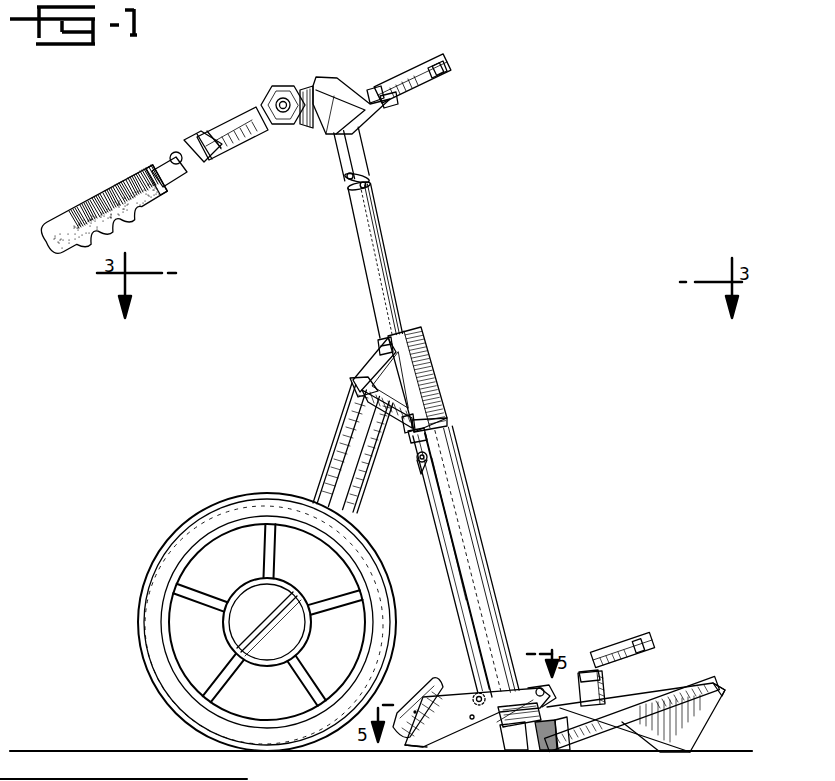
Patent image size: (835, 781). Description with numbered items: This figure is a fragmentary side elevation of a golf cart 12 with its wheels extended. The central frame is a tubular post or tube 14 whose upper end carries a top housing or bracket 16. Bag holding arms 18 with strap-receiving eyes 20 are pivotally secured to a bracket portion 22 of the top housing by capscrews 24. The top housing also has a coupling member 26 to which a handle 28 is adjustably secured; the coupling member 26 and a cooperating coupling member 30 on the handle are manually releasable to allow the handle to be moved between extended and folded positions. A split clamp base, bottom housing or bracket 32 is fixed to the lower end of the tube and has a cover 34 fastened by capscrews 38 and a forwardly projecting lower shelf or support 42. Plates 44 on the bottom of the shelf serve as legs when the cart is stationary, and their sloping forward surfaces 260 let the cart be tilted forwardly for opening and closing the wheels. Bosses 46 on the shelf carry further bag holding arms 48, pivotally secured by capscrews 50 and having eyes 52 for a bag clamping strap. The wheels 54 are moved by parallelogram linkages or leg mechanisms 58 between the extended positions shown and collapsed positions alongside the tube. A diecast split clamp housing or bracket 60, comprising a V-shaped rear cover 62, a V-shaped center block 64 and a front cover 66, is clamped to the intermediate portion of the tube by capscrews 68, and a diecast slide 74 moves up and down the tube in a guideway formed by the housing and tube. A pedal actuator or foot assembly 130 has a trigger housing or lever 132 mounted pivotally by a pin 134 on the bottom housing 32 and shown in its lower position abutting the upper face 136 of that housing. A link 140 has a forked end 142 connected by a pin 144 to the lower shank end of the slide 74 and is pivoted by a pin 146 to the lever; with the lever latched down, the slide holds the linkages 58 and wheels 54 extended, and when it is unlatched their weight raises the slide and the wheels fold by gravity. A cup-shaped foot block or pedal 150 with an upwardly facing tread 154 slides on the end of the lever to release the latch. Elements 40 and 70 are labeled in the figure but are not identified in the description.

The golf cart 12 is at (414, 266).
The tubular post or tube 14 is at (474, 530).
The top housing or bracket 16 is at (349, 94).
The bag holding arms 18 is at (422, 80).
The strap-receiving eyes 20 is at (441, 67).
The bracket portion 22 is at (388, 102).
The capscrews 24 is at (373, 90).
The coupling member 26 is at (291, 84).
The handle 28 is at (233, 117).
The cooperating coupling member 30 is at (262, 103).
The bottom housing or bracket 32 is at (562, 732).
The cover 34 is at (542, 752).
The capscrews 38 is at (507, 750).
The hinge pin 40 is at (546, 698).
The lower shelf or support 42 is at (602, 730).
The plates 44 is at (700, 735).
The bosses 46 is at (606, 686).
The bag holding arms 48 is at (613, 651).
The capscrews 50 is at (586, 671).
The eyes 52 is at (648, 645).
The wheels 54 is at (256, 498).
The parallelogram linkages or leg mechanisms 58 is at (326, 447).
The split clamp housing or bracket 60 is at (412, 372).
The rear cover 62 is at (389, 341).
The center block 64 is at (432, 428).
The front cover 66 is at (432, 372).
The capscrews 68 is at (379, 349).
The clip 70 is at (447, 416).
The slide 74 is at (418, 448).
The pedal actuator or foot assembly 130 is at (453, 692).
The trigger housing or lever 132 is at (426, 752).
The pin 134 is at (540, 698).
The upper face 136 is at (527, 705).
The link 140 is at (441, 538).
The forked end 142 is at (421, 477).
The pin 144 is at (417, 462).
The pin 146 is at (480, 708).
The foot block or pedal 150 is at (431, 682).
The tread 154 is at (412, 696).
The sloping forward surfaces 260 is at (716, 703).